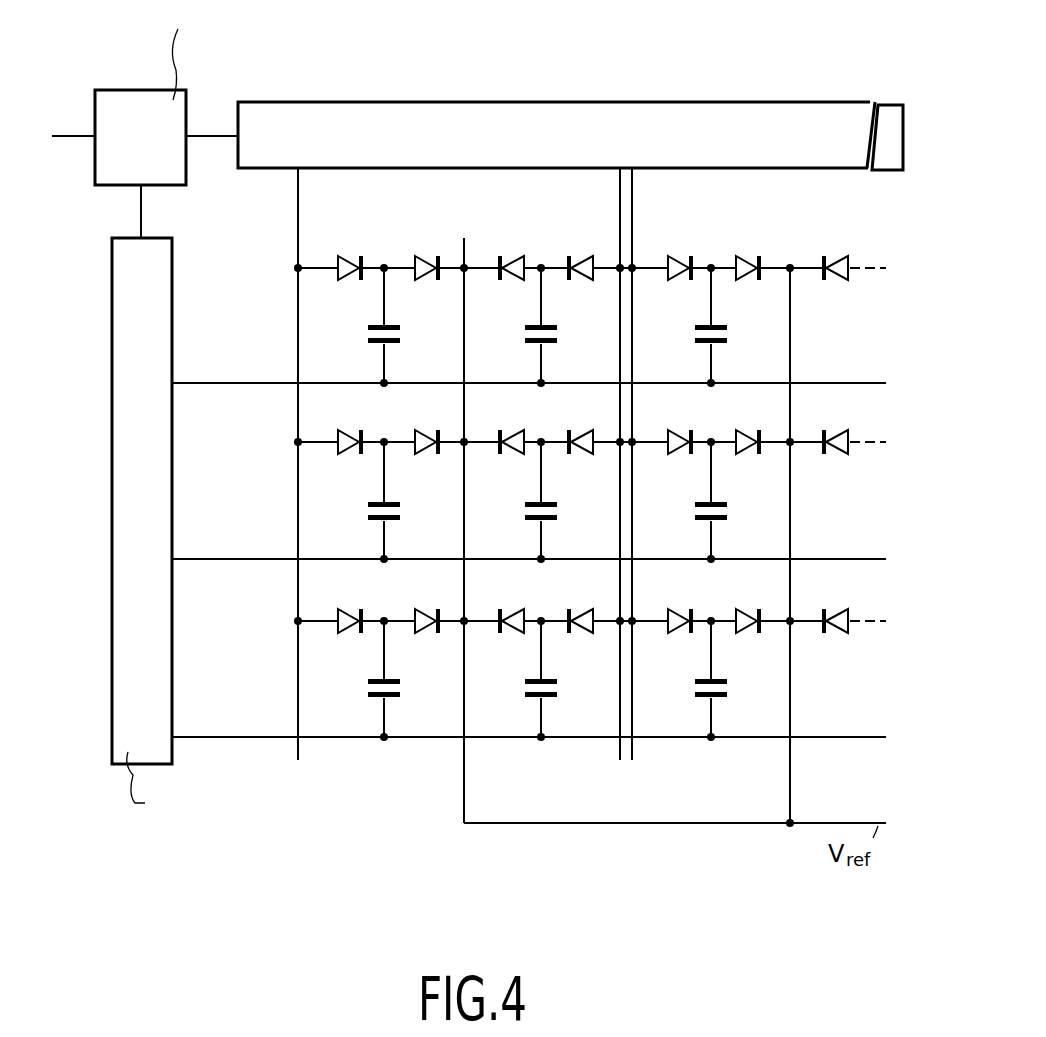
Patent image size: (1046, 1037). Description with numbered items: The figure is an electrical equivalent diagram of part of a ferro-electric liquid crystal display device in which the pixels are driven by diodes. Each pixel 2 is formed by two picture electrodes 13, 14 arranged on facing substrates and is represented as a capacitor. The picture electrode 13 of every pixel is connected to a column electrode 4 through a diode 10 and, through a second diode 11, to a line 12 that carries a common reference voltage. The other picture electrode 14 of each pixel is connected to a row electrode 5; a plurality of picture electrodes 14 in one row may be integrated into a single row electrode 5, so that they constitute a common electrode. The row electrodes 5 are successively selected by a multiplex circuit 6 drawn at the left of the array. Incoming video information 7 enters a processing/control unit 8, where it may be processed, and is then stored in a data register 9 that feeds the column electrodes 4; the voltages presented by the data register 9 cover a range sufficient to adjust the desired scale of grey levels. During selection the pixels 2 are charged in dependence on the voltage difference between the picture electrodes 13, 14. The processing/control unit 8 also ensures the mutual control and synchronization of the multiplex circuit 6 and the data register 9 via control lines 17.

The pixel 2 is at (567, 502).
The column electrode 4 is at (298, 187).
The row electrode 5 is at (221, 381).
The multiplex circuit 6 is at (112, 528).
The incoming video information 7 is at (67, 131).
The processing/control unit 8 is at (148, 89).
The data register 9 is at (383, 101).
The diode 10 is at (348, 255).
The second diode 11 is at (425, 255).
The line for a common reference voltage 12 is at (466, 795).
The picture electrode 13 is at (393, 328).
The picture electrode 14 is at (393, 343).
The control lines 17 is at (141, 210).